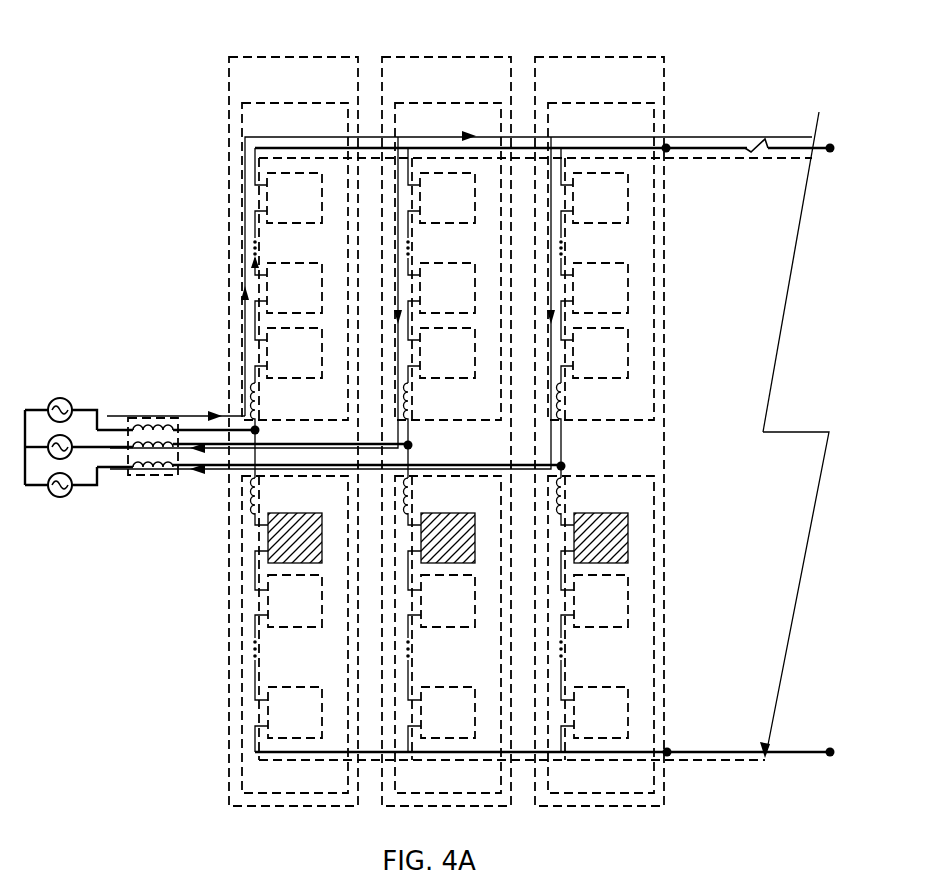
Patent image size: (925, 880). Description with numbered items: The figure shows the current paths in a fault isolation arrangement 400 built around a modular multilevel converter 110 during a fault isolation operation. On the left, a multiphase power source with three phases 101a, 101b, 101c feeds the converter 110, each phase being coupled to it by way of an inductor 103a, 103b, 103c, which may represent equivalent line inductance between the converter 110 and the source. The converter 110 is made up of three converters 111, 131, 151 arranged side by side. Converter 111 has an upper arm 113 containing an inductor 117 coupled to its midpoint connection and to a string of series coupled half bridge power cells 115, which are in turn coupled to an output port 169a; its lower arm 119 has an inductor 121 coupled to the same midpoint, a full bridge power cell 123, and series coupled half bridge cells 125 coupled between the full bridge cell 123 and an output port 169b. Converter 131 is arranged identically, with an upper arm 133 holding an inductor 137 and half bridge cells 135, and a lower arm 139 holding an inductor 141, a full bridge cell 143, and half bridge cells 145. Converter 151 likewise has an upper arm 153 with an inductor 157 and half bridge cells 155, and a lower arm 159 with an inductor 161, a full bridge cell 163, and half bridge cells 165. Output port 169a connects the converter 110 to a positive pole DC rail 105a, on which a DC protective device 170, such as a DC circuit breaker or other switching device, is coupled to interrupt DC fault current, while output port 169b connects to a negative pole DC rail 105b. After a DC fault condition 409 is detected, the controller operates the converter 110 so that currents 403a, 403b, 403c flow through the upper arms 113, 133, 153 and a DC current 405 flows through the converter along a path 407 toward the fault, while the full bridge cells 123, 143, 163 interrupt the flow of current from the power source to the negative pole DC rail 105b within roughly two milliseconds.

The power conversion system 400 is at (177, 820).
The modular multilevel converter 110 is at (289, 816).
The phase 101a is at (75, 401).
The phase 101b is at (72, 460).
The phase 101c is at (34, 489).
The inductor 103a is at (164, 422).
The inductor 103b is at (170, 431).
The inductor 103c is at (157, 478).
The current 403a is at (118, 411).
The current 403b is at (116, 469).
The current 403c is at (202, 475).
The DC current 405 is at (683, 155).
The current path through DC source 407 is at (797, 134).
The DC fault condition 409 is at (796, 290).
The converter 111 is at (232, 57).
The upper arm 113 is at (346, 103).
The half bridge power cells 115 is at (322, 223).
The inductor 117 is at (258, 390).
The lower arm 119 is at (243, 795).
The inductor 121 is at (258, 484).
The full bridge power cell 123 is at (322, 520).
The half bridge cells 125 is at (322, 627).
The converter 131 is at (441, 409).
The upper arm 133 is at (451, 225).
The half bridge cells 135 is at (456, 289).
The inductor 137 is at (430, 430).
The lower arm 139 is at (454, 656).
The inductor 141 is at (430, 496).
The full bridge cell 143 is at (461, 521).
The half bridge cells 145 is at (456, 618).
The converter 151 is at (594, 409).
The upper arm 153 is at (604, 225).
The half bridge cells 155 is at (609, 289).
The inductor 157 is at (583, 430).
The lower arm 159 is at (605, 656).
The inductor 161 is at (583, 496).
The full bridge cell 163 is at (614, 521).
The half bridge cells 165 is at (609, 618).
The output port 169a is at (668, 146).
The output port 169b is at (669, 756).
The DC protective device 170 is at (751, 144).
The positive pole DC rail 105a is at (720, 150).
The negative pole DC rail 105b is at (708, 750).